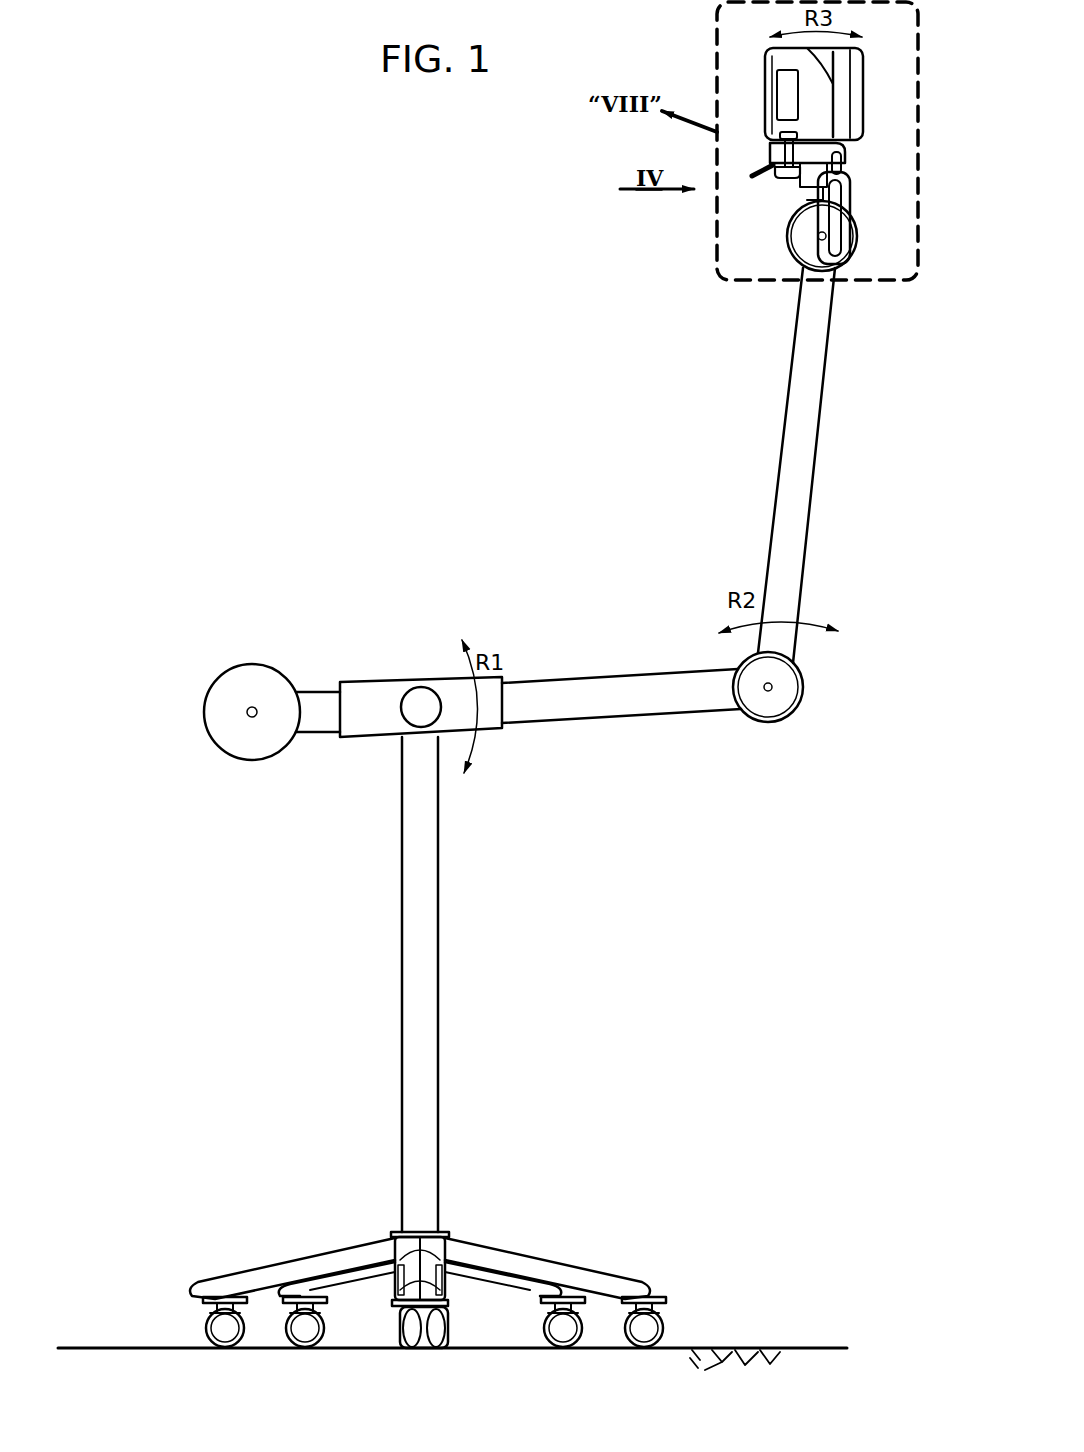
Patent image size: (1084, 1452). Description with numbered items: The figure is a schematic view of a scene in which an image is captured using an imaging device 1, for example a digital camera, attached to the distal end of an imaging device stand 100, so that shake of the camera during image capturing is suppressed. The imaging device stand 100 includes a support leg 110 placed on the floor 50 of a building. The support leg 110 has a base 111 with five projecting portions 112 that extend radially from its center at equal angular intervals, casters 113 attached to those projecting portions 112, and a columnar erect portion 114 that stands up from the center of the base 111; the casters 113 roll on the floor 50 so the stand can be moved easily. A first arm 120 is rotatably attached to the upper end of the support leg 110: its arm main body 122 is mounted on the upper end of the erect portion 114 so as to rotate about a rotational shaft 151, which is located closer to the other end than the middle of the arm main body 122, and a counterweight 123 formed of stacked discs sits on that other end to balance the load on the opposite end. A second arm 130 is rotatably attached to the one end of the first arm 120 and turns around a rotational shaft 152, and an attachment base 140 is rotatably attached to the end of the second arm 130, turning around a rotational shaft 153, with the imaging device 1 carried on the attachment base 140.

The imaging device 1 is at (757, 86).
The floor 50 is at (805, 1348).
The imaging device stand 100 is at (437, 527).
The support leg 110 is at (400, 1070).
The base 111 is at (345, 1247).
The projecting portions 112 is at (300, 1270).
The casters 113 is at (288, 1313).
The erect portion 114 is at (402, 952).
The first arm 120 is at (653, 671).
The arm main body 122 is at (585, 677).
The counterweight 123 is at (211, 687).
The second arm 130 is at (780, 449).
The attachment base 140 is at (776, 181).
The rotational shaft 151 is at (401, 700).
The rotational shaft 152 is at (737, 668).
The rotational shaft 153 is at (794, 254).